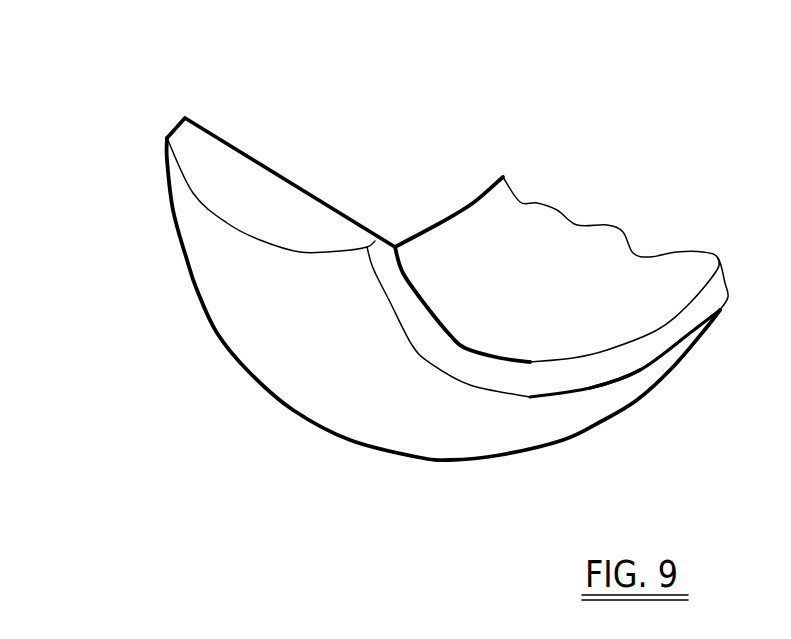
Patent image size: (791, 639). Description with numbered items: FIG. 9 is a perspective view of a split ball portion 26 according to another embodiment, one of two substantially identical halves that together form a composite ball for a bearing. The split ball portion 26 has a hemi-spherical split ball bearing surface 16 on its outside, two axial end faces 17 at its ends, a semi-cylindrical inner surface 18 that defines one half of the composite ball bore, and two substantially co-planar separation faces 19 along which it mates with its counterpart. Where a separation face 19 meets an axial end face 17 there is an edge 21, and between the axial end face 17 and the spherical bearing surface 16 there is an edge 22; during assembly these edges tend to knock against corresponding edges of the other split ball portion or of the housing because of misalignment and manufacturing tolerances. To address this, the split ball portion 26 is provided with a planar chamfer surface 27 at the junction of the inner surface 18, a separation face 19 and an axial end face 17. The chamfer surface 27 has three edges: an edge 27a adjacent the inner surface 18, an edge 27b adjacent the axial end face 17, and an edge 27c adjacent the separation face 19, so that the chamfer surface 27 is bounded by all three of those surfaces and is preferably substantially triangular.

The hemi-spherical split ball bearing surface 16 is at (238, 327).
The axial end face 17 is at (567, 383).
The semi-cylindrical inner surface 18 is at (503, 243).
The separation face 19 is at (227, 160).
The edge 21 is at (382, 240).
The edge 22 is at (473, 388).
The split ball portion 26 is at (368, 107).
The chamfer surface 27 is at (383, 240).
The edge 27a is at (395, 247).
The edge 27b is at (383, 243).
The edge 27c is at (375, 237).